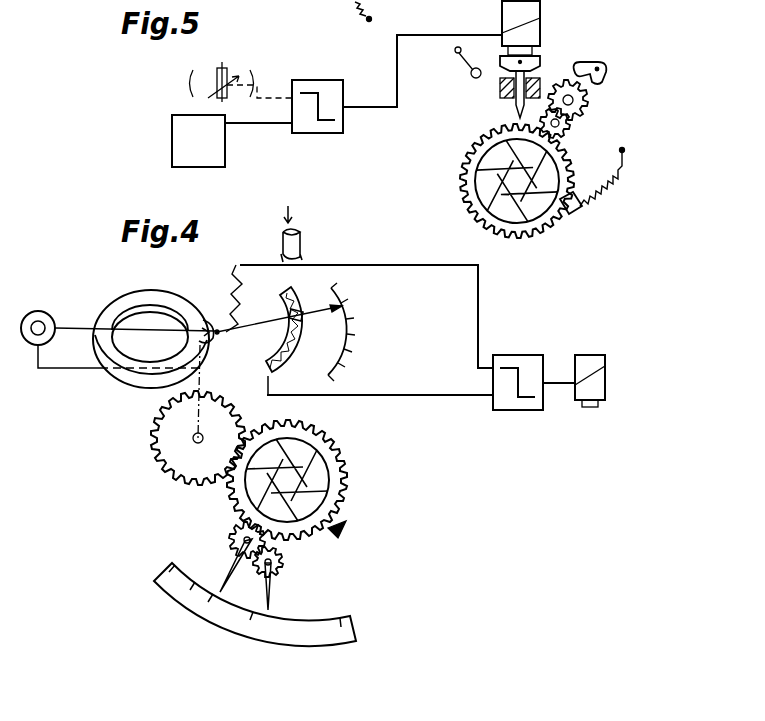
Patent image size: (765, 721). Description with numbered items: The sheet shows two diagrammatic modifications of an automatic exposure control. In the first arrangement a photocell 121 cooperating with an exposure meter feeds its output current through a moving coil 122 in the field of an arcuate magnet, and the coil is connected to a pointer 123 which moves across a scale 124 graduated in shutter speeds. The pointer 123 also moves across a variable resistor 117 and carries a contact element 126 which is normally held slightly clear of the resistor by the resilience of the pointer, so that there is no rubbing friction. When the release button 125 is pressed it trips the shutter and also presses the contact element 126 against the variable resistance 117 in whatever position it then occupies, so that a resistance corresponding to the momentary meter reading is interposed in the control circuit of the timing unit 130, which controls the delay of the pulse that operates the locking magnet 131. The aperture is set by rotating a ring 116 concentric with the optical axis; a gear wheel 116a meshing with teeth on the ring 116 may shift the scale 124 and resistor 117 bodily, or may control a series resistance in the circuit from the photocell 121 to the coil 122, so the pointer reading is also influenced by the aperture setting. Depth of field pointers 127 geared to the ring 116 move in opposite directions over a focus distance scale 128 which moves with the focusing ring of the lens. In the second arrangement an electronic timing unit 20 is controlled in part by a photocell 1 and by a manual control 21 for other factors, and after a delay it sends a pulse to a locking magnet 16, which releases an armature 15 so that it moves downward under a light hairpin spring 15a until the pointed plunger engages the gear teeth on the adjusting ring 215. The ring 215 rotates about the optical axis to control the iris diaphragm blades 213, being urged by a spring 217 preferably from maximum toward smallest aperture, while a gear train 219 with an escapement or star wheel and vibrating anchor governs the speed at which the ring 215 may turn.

In FIG. 5, the photocell 1 is at (172, 141).
In FIG. 5, the electronic timing unit 20 is at (312, 133).
In FIG. 5, the manual control 21 is at (230, 68).
In FIG. 5, the locking magnet 16 is at (540, 31).
In FIG. 5, the armature 15 is at (522, 62).
In FIG. 5, the hairpin spring 15a is at (482, 78).
In FIG. 5, the gear train 219 is at (589, 102).
In FIG. 5, the iris diaphragm blades 213 is at (490, 196).
In FIG. 5, the adjusting ring 215 is at (521, 240).
In FIG. 5, the spring 217 is at (601, 186).
In FIG. 4, the photocell 121 is at (45, 311).
In FIG. 4, the moving coil 122 is at (205, 322).
In FIG. 4, the pointer 123 is at (260, 324).
In FIG. 4, the scale 124 is at (358, 320).
In FIG. 4, the release button 125 is at (300, 243).
In FIG. 4, the contact element 126 is at (300, 320).
In FIG. 4, the variable resistor 117 is at (284, 360).
In FIG. 4, the timing unit 130 is at (515, 355).
In FIG. 4, the locking magnet 131 is at (585, 355).
In FIG. 4, the ring 116 is at (332, 471).
In FIG. 4, the gear wheel 116a is at (180, 456).
In FIG. 4, the depth of field pointers 127 is at (268, 604).
In FIG. 4, the focus distance scale 128 is at (313, 640).